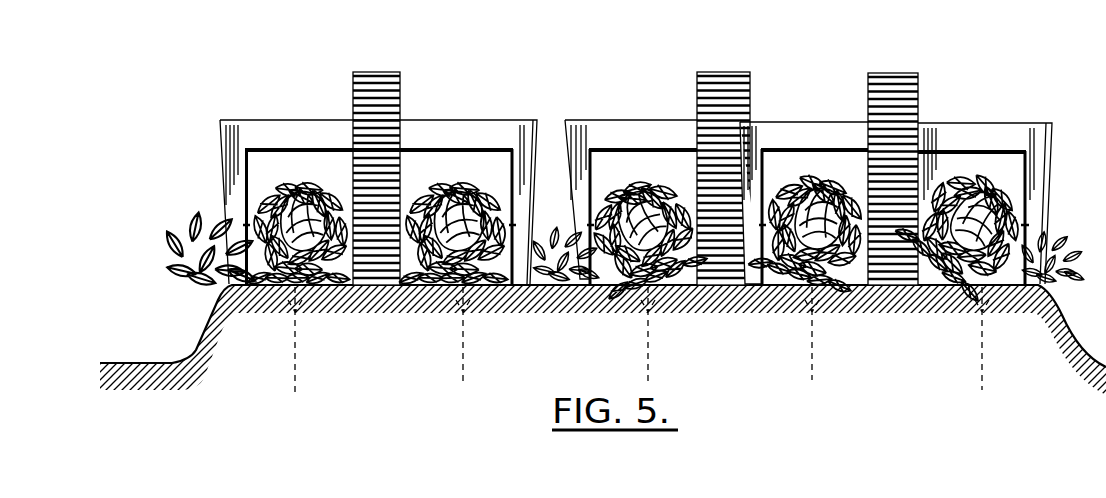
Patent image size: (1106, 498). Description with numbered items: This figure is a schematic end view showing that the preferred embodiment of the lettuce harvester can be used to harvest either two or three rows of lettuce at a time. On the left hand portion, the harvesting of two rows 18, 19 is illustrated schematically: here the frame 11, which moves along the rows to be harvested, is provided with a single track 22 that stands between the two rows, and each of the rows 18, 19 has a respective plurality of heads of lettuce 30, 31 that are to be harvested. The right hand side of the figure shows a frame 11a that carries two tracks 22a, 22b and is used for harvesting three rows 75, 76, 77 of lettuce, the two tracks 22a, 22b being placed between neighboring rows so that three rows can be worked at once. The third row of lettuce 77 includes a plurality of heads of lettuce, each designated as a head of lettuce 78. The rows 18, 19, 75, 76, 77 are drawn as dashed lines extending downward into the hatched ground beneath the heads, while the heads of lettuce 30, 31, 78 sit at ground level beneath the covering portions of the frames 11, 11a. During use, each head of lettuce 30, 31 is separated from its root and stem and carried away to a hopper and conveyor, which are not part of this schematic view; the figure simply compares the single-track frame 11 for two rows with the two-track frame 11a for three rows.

The frame 11 is at (272, 120).
The frame 11a is at (640, 137).
The track 22 is at (378, 72).
The track 22a is at (718, 72).
The track 22b is at (888, 73).
The head of lettuce 30 is at (210, 215).
The head of lettuce 31 is at (463, 178).
The head of lettuce 78 is at (1017, 177).
The row of lettuce 18 is at (286, 372).
The row of lettuce 19 is at (456, 372).
The row of lettuce 75 is at (652, 360).
The row of lettuce 76 is at (814, 373).
The row of lettuce 77 is at (980, 372).